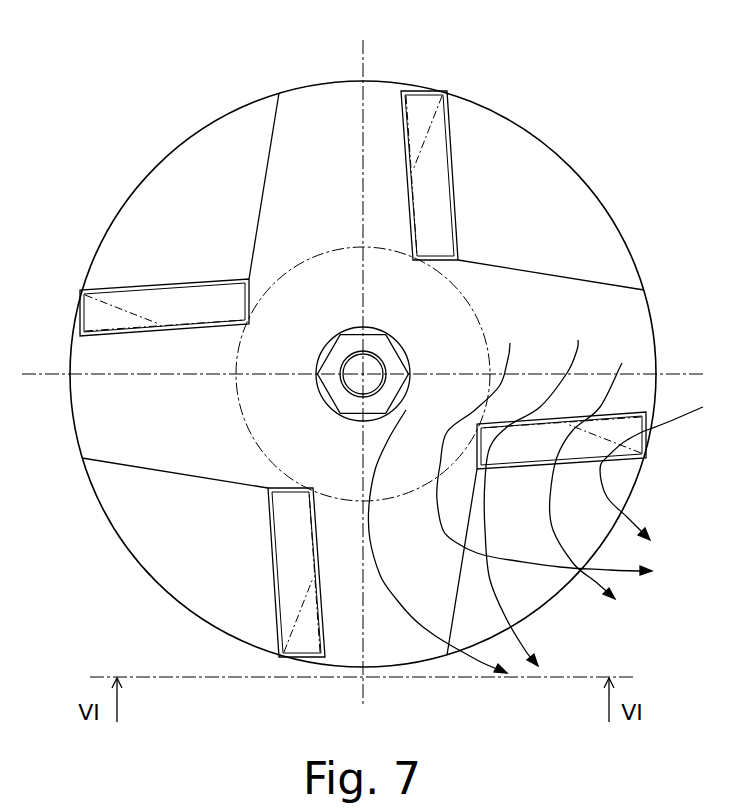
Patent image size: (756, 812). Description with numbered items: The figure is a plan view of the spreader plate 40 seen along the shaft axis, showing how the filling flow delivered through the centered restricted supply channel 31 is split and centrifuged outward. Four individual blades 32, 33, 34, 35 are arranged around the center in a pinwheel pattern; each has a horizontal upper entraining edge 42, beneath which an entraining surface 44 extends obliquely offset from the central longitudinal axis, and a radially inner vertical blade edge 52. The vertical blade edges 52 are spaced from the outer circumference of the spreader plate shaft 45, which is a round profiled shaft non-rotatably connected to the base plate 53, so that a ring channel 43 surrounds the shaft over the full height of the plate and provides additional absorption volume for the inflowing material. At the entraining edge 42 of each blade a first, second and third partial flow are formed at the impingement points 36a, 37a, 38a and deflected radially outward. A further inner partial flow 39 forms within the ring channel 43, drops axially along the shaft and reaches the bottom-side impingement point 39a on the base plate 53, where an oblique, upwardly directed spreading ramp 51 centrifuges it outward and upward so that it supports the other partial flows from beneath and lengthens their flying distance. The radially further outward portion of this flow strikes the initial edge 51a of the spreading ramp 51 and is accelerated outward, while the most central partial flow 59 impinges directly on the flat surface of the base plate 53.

The spreader plate 40 is at (643, 235).
The restricted supply channel 31 is at (250, 125).
The blade 32 is at (622, 471).
The blade 33 is at (440, 155).
The blade 34 is at (168, 288).
The blade 35 is at (288, 577).
The impingement point 36a is at (669, 459).
The impingement point 37a is at (597, 467).
The impingement point 38a is at (544, 487).
The bottom-side impingement point 39a is at (544, 445).
The inner partial flow 39 is at (614, 570).
The entraining edge 42 is at (106, 297).
The ring channel 43 is at (466, 298).
The entraining surface 44 is at (193, 300).
The spreader plate shaft 45 is at (378, 360).
The spreading ramp 51 is at (208, 143).
The edge of the spreading ramp 51a is at (470, 507).
The vertical blade edge 52 is at (413, 260).
The base plate 53 is at (312, 120).
The partial flow 59 is at (401, 608).